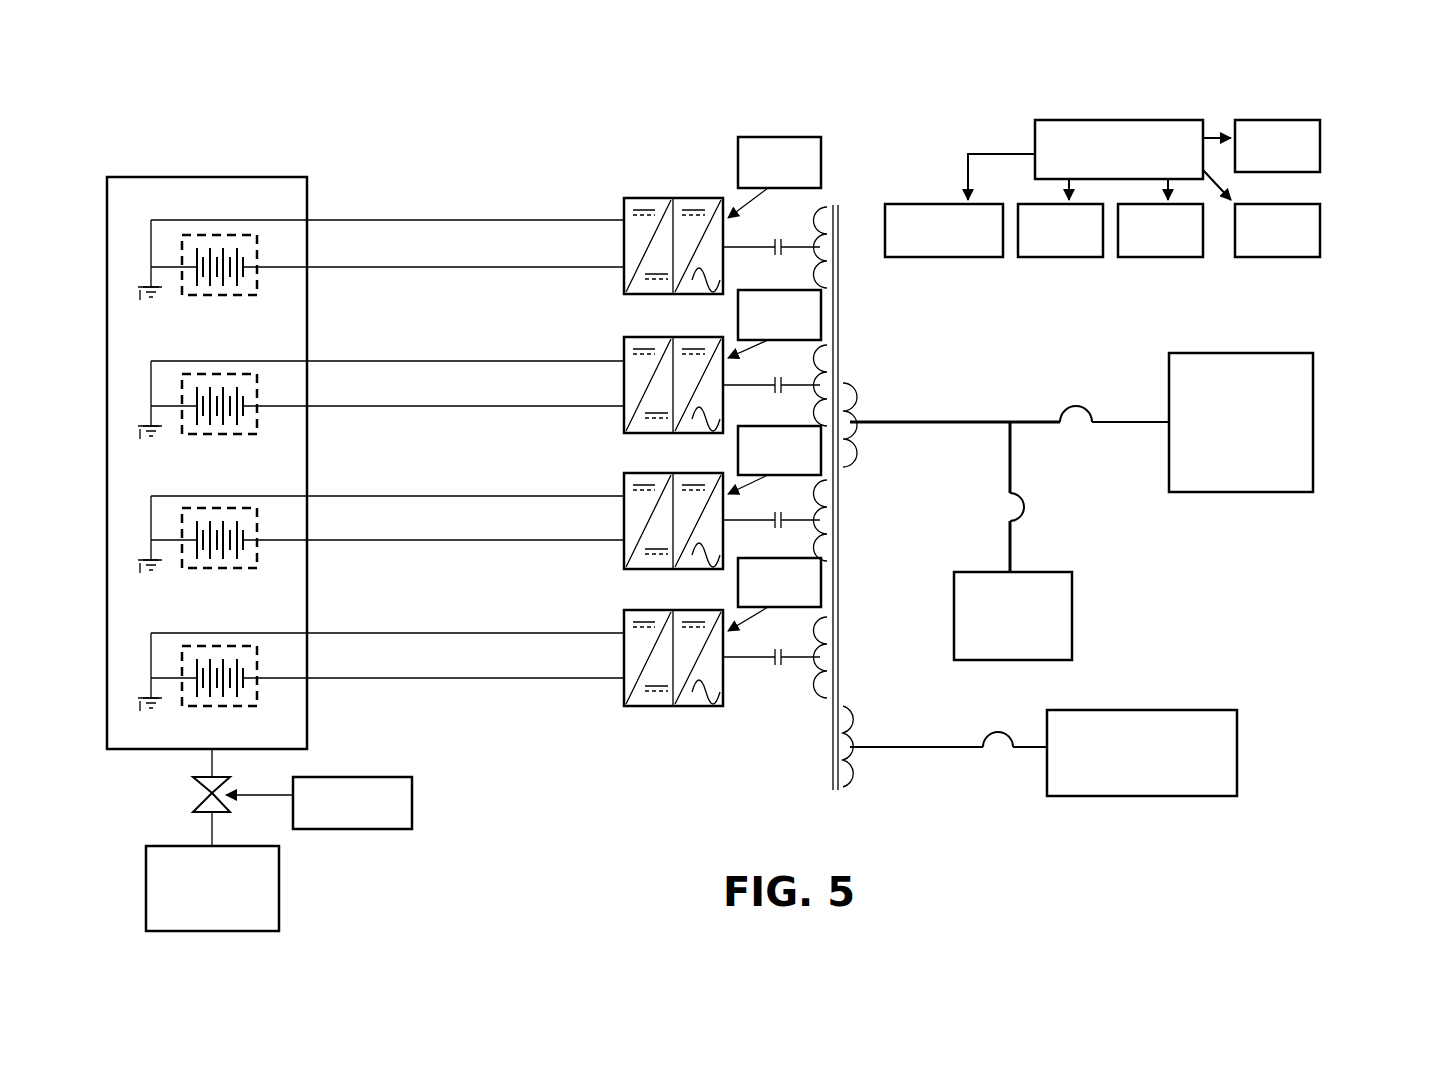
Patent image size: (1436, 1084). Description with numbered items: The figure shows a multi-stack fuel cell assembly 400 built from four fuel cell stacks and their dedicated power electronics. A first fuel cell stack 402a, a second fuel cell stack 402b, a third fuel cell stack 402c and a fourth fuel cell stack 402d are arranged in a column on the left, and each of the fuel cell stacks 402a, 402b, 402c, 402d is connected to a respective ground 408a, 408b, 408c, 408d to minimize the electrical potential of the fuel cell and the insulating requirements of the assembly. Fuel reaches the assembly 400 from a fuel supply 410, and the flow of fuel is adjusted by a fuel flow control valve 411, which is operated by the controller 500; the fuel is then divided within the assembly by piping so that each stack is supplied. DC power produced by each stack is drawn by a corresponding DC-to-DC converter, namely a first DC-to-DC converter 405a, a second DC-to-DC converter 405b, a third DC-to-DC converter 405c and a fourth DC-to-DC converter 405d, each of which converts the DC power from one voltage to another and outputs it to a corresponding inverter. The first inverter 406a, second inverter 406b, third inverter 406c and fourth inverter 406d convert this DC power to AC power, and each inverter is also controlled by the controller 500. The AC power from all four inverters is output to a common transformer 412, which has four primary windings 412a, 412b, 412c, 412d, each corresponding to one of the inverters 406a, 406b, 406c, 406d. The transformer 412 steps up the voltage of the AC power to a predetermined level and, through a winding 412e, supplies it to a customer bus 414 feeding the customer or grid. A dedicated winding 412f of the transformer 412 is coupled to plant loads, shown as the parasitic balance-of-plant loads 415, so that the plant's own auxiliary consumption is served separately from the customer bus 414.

The assembly 400 is at (493, 186).
The first fuel cell stack 402a is at (258, 288).
The second fuel cell stack 402b is at (258, 427).
The third fuel cell stack 402c is at (258, 562).
The fourth fuel cell stack 402d is at (258, 700).
The first DC-to-DC converter 405a is at (640, 207).
The second DC-to-DC converter 405b is at (628, 352).
The third DC-to-DC converter 405c is at (628, 484).
The fourth DC-to-DC converter 405d is at (632, 614).
The first inverter 406a is at (716, 262).
The second inverter 406b is at (716, 400).
The third inverter 406c is at (716, 536).
The fourth inverter 406d is at (712, 695).
The ground 408a is at (146, 300).
The ground 408b is at (146, 439).
The ground 408c is at (146, 573).
The ground 408d is at (148, 711).
The fuel supply 410 is at (280, 890).
The fuel flow control valve 411 is at (194, 792).
The common transformer 412 is at (838, 210).
The primary winding 412a is at (816, 224).
The primary winding 412b is at (822, 368).
The primary winding 412c is at (822, 504).
The primary winding 412d is at (822, 640).
The winding 412e is at (850, 468).
The dedicated winding 412f is at (850, 788).
The customer bus 414 is at (950, 425).
The parasitic balance-of-plant loads 415 is at (1105, 797).
The controller 500 is at (804, 138).